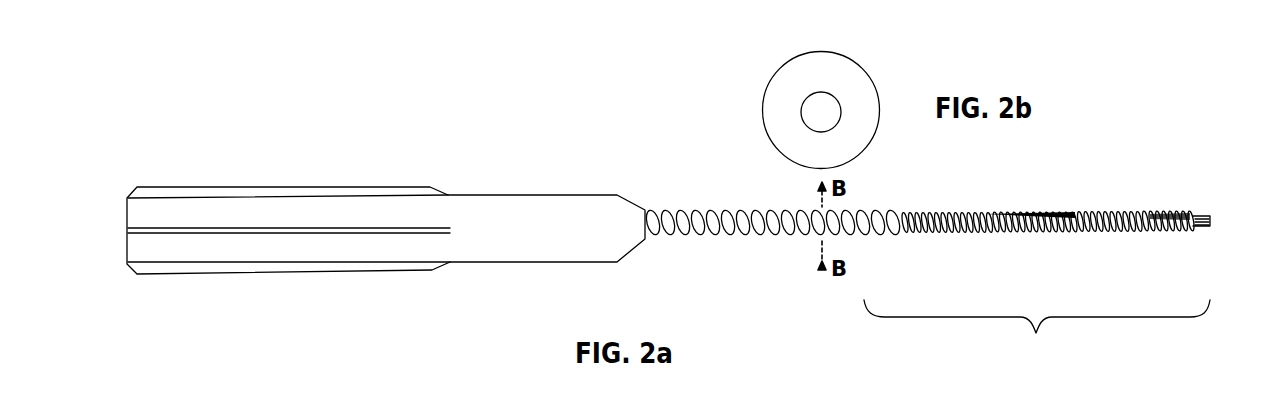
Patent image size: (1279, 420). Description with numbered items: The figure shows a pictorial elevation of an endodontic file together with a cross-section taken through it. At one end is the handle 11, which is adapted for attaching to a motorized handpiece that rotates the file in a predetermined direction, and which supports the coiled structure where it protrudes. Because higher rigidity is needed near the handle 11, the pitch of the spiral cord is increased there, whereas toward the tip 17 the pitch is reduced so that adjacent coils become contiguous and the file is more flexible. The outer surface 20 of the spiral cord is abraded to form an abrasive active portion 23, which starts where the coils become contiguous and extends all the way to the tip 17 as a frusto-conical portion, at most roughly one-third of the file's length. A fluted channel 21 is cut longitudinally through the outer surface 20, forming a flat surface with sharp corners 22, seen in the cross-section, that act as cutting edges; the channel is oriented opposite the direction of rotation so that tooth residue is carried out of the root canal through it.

In FIG. 2A, the handle 11 is at (292, 187).
In FIG. 2A, the tip 17 is at (1215, 217).
In FIG. 2B, the outer surface 20 is at (820, 52).
In FIG. 2A, the fluted channel 21 is at (1062, 230).
In FIG. 2B, the sharp corners 22 is at (800, 168).
In FIG. 2A, the active portion 23 is at (1037, 335).